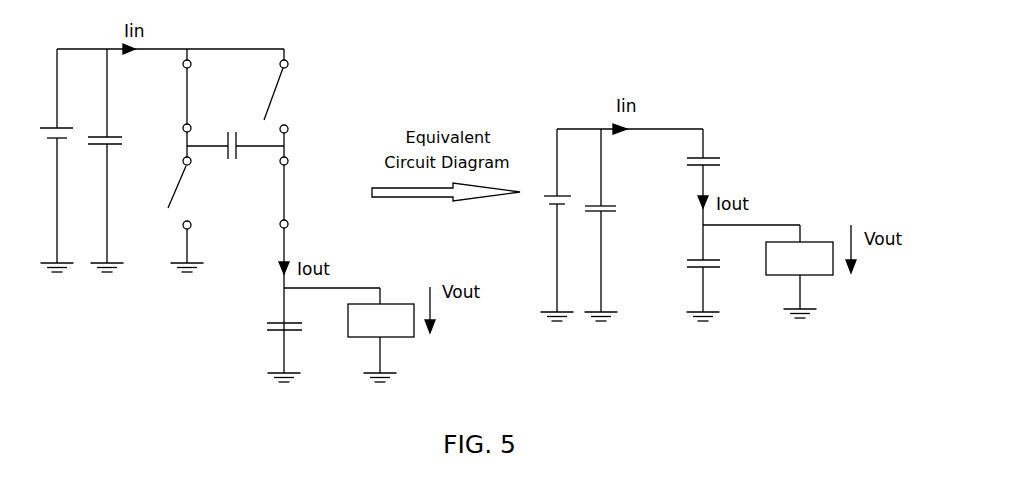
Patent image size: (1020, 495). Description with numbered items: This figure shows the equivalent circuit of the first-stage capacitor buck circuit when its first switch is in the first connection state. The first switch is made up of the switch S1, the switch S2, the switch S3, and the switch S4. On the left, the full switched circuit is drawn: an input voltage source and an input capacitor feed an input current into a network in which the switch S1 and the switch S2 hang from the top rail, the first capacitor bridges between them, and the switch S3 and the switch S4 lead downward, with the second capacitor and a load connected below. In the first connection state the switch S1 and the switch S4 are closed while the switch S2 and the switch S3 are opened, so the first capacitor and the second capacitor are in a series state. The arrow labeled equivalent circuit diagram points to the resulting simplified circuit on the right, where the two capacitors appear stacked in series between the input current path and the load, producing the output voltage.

The switch S1 is at (200, 105).
The switch S2 is at (285, 105).
The switch S3 is at (191, 210).
The switch S4 is at (297, 192).